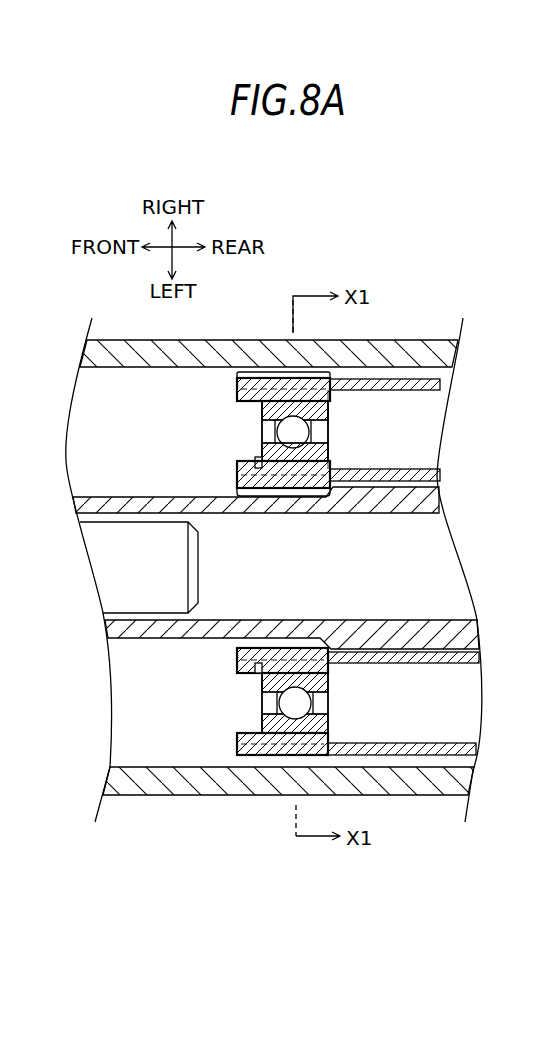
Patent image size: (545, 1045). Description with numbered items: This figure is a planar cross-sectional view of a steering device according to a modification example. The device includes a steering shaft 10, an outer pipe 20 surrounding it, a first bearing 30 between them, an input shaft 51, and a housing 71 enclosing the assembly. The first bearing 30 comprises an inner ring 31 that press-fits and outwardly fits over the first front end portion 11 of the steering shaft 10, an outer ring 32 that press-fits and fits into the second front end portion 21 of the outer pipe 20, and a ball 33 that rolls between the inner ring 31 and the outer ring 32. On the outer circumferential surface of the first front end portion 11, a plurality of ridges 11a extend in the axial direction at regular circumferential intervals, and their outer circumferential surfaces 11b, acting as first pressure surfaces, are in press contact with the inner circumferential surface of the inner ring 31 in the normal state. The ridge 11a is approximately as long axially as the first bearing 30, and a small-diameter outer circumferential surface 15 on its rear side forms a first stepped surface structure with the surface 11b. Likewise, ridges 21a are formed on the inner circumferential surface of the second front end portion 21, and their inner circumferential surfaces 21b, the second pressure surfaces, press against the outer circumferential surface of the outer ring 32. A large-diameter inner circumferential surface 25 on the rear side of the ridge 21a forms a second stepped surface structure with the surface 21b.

The steering shaft 10 is at (440, 478).
The first front end portion 11 is at (246, 499).
The ridges 11a is at (261, 463).
The outer circumferential surfaces 11b is at (261, 437).
The small-diameter outer circumferential surface 15 is at (353, 469).
The outer pipe 20 is at (442, 388).
The second front end portion 21 is at (246, 365).
The ridges 21a is at (260, 420).
The inner circumferential surfaces 21b is at (261, 430).
The large-diameter inner circumferential surface 25 is at (386, 394).
The first bearing 30 is at (236, 697).
The inner ring 31 is at (262, 683).
The outer ring 32 is at (262, 729).
The ball 33 is at (287, 707).
The input shaft 51 is at (178, 570).
The housing 71 is at (414, 350).